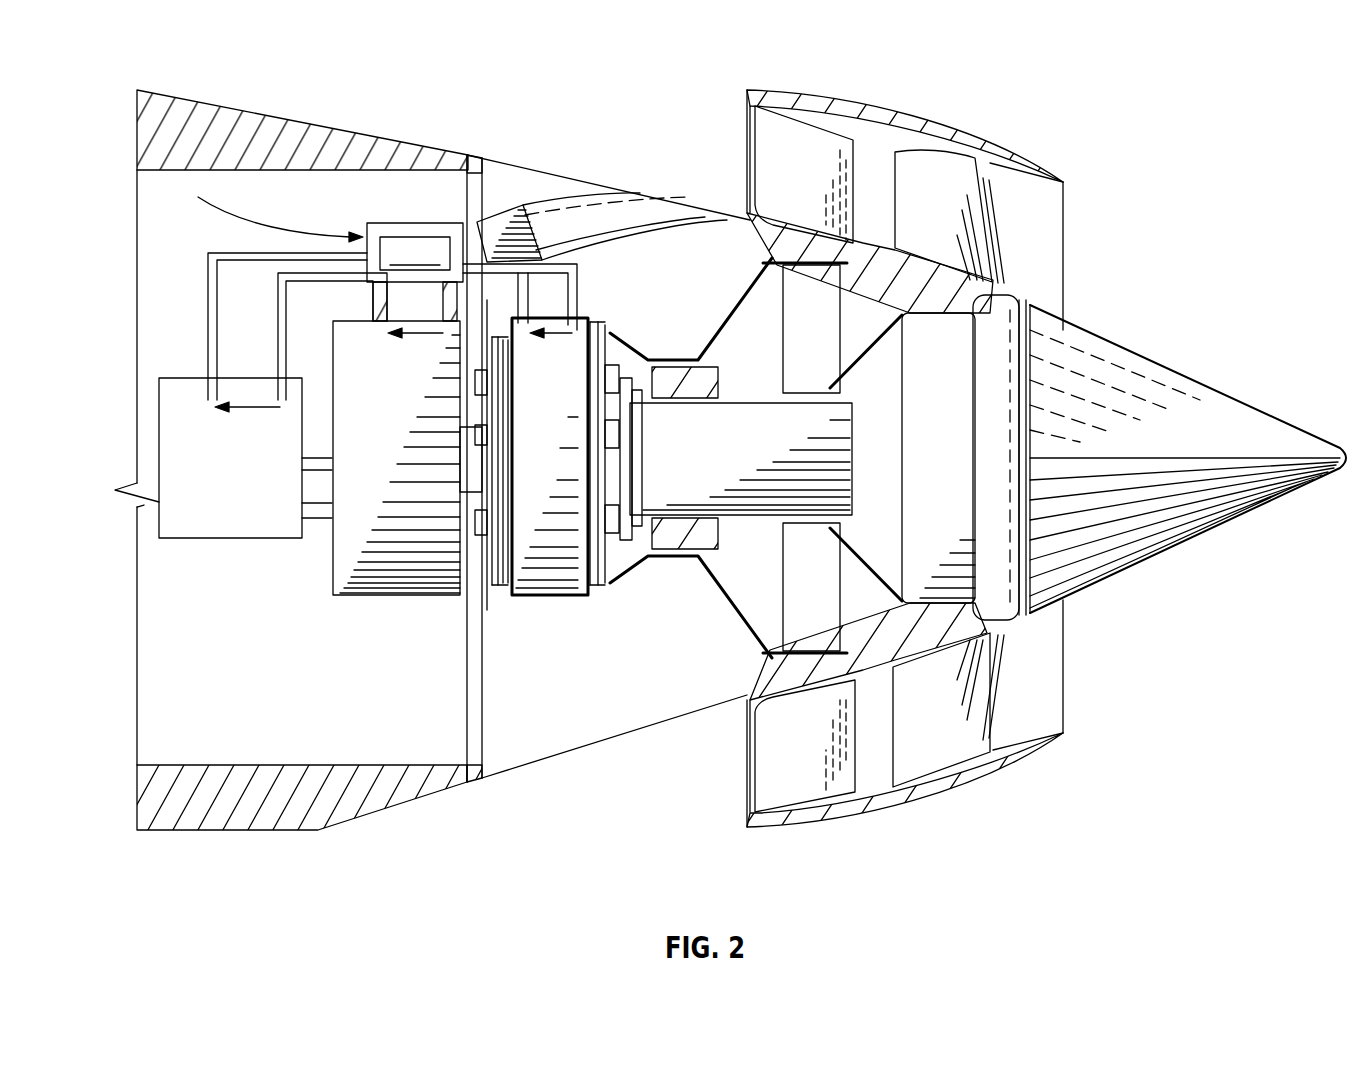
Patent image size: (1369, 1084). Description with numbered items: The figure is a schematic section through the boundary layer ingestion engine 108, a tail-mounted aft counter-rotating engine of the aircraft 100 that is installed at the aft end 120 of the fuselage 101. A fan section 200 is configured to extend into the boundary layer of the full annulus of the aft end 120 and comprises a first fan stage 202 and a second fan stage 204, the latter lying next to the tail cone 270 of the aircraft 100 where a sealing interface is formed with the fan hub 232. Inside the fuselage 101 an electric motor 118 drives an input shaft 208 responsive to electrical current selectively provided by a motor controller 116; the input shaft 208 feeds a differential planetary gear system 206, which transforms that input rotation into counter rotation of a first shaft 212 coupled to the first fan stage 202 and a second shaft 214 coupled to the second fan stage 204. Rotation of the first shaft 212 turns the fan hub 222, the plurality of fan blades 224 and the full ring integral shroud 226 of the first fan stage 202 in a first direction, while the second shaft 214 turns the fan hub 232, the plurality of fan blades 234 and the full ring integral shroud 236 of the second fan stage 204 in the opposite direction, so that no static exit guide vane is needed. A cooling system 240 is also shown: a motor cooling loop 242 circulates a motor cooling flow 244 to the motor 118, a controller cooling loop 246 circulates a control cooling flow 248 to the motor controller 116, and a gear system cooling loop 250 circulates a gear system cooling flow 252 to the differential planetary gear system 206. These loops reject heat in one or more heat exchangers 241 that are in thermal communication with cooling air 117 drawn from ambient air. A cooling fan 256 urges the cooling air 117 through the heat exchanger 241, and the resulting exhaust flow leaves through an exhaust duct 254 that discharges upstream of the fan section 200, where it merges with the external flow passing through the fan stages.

The aircraft 100 is at (228, 830).
The fuselage 101 is at (208, 113).
The boundary layer ingestion engine 108 is at (676, 747).
The motor controller 116 is at (259, 522).
The cooling air 117 is at (263, 223).
The motor 118 is at (411, 526).
The aft end 120 is at (1188, 459).
The fan section 200 is at (1014, 434).
The first fan stage 202 is at (907, 434).
The second fan stage 204 is at (1063, 222).
The differential planetary gear system 206 is at (540, 551).
The input shaft 208 is at (475, 473).
The first shaft 212 is at (700, 550).
The second shaft 214 is at (655, 552).
The fan hub 222 is at (742, 220).
The fan blades 224 is at (773, 153).
The full ring integral shroud 226 is at (830, 103).
The fan hub 232 is at (991, 297).
The fan blades 234 is at (967, 218).
The full ring integral shroud 236 is at (943, 140).
The cooling system 240 is at (399, 182).
The heat exchanger 241 is at (415, 253).
The motor cooling loop 242 is at (373, 290).
The motor cooling flow 244 is at (420, 337).
The controller cooling loop 246 is at (206, 290).
The control cooling flow 248 is at (253, 410).
The gear system cooling loop 250 is at (579, 312).
The gear system cooling flow 252 is at (548, 337).
The exhaust duct 254 is at (644, 214).
The cooling fan 256 is at (509, 228).
The tail cone 270 is at (1250, 412).